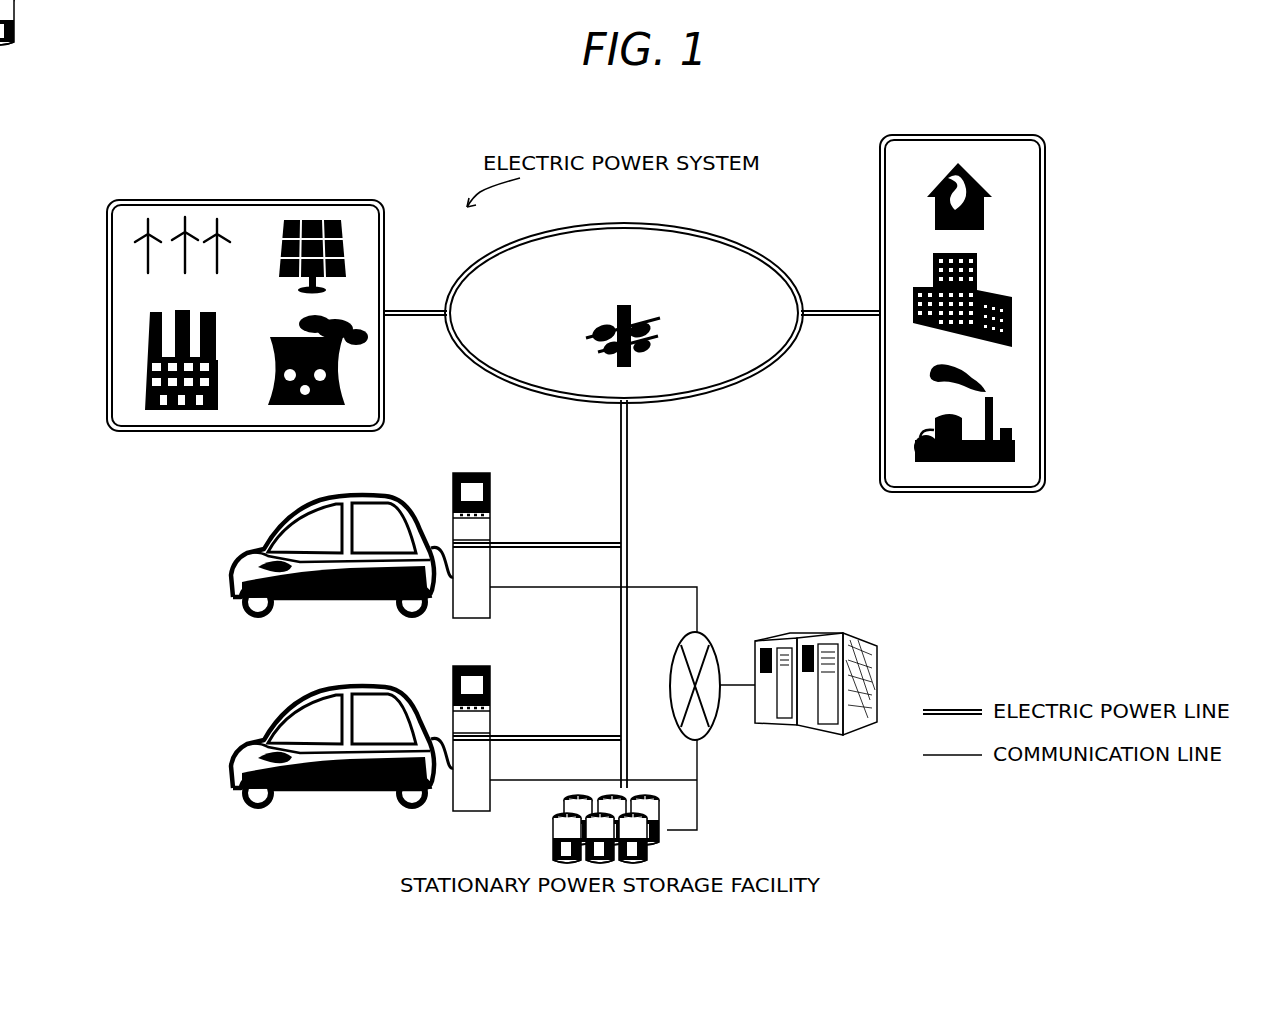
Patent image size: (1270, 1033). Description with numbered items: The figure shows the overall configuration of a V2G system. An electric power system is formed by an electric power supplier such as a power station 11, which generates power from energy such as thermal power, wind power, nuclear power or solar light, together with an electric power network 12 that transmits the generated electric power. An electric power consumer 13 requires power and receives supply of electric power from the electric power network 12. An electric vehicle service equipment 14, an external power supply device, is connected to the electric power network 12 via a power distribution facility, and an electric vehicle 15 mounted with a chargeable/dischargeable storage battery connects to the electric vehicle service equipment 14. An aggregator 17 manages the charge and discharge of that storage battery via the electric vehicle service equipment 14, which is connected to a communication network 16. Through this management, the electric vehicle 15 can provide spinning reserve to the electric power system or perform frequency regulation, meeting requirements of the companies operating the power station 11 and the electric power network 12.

The power station 11 is at (245, 297).
The electric power network 12 is at (624, 313).
The electric power consumer 13 is at (965, 297).
The electric vehicle service equipment 14 is at (492, 493).
The electric vehicle 15 is at (268, 527).
The communication network 16 is at (710, 740).
The aggregator 17 is at (825, 669).